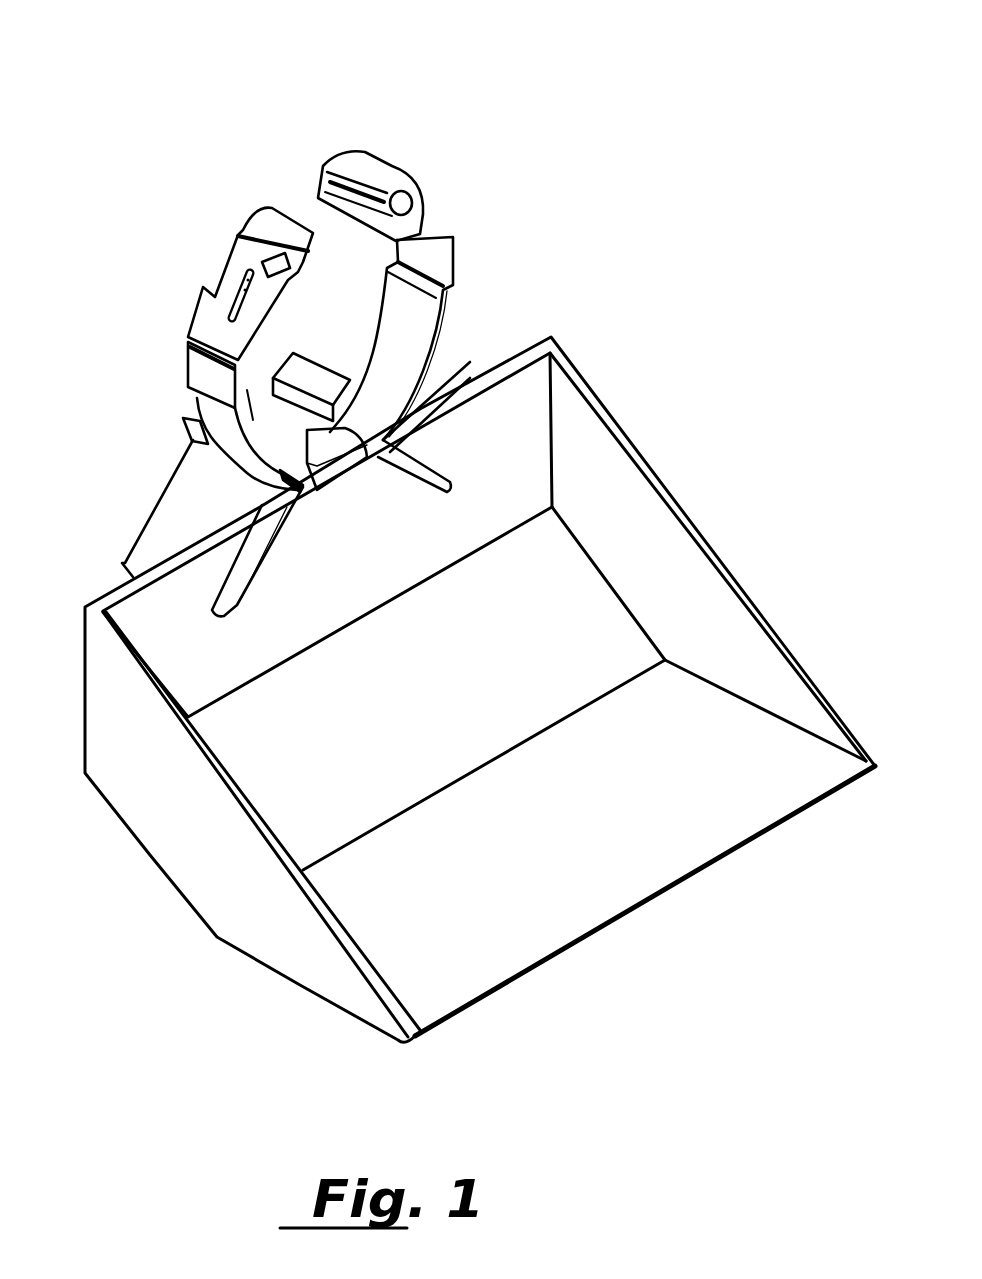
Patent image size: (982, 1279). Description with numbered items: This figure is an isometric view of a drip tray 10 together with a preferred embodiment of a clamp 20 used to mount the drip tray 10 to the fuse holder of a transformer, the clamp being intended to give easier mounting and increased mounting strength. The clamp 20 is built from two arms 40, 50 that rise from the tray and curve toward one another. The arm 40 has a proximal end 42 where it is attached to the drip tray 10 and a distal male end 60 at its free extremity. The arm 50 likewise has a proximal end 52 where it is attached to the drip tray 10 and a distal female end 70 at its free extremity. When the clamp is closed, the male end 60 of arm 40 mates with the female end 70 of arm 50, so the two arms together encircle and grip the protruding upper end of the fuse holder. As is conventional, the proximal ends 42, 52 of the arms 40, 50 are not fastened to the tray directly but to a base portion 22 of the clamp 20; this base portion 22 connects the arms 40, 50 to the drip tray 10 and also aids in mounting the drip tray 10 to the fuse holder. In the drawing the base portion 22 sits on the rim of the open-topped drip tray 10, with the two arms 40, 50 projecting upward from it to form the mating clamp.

The drip tray 10 is at (512, 666).
The clamp 20 is at (327, 311).
The base portion 22 is at (173, 507).
The arm 40 is at (205, 368).
The proximal end 42 is at (205, 446).
The arm 50 is at (410, 338).
The proximal end 52 is at (440, 352).
The distal male end 60 is at (235, 213).
The distal female end 70 is at (360, 140).